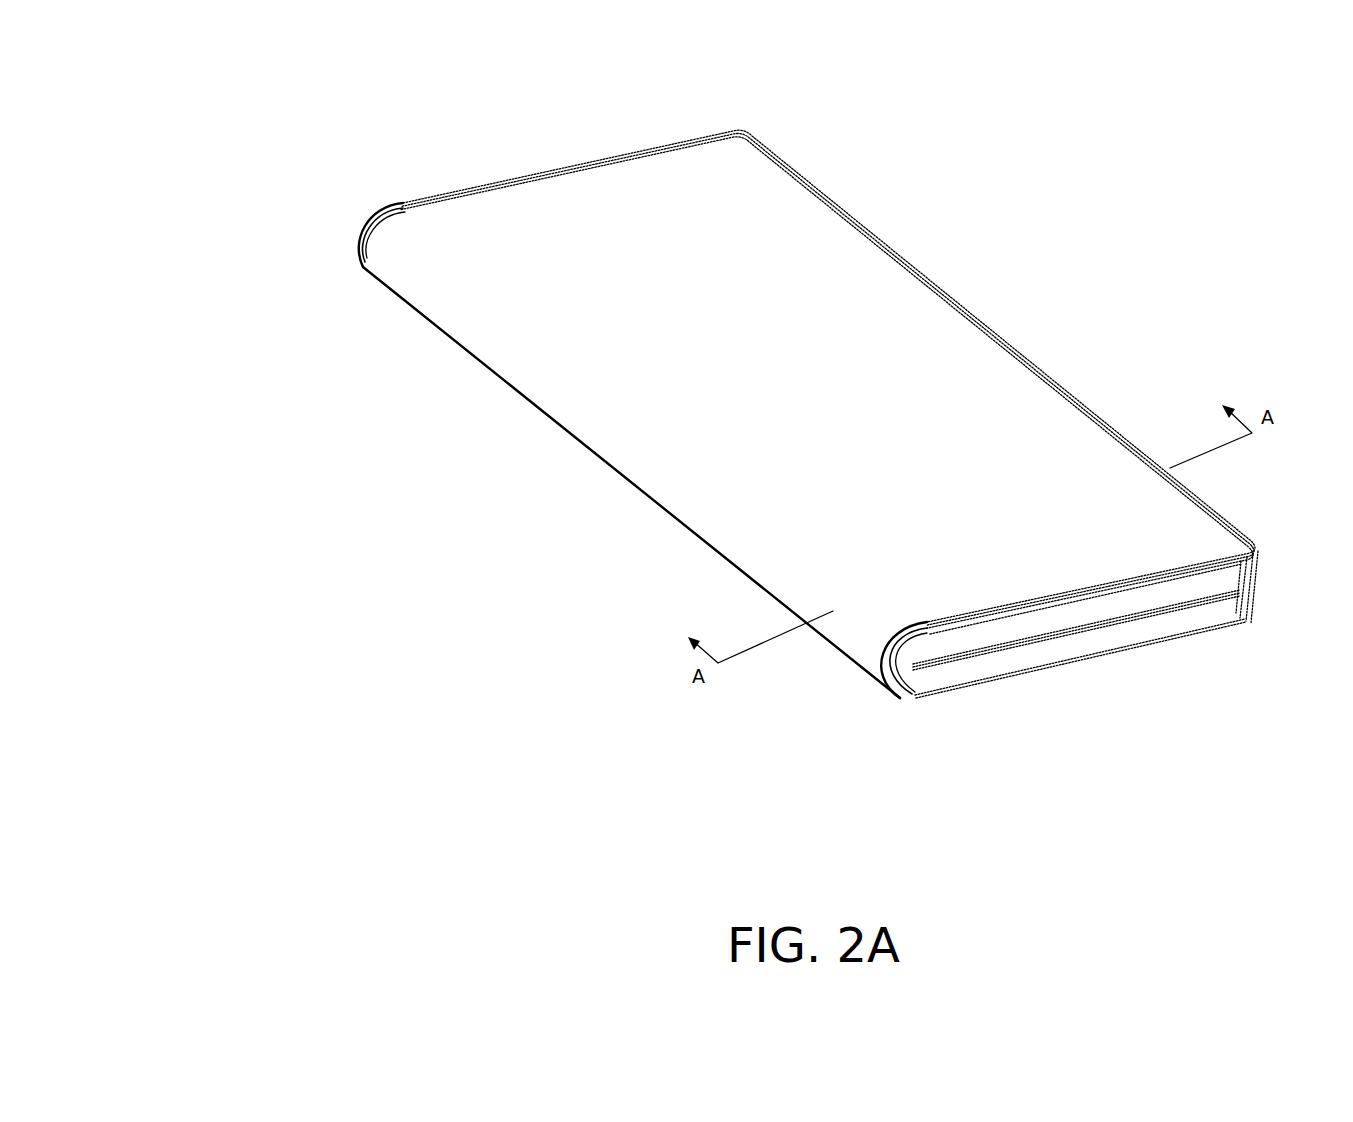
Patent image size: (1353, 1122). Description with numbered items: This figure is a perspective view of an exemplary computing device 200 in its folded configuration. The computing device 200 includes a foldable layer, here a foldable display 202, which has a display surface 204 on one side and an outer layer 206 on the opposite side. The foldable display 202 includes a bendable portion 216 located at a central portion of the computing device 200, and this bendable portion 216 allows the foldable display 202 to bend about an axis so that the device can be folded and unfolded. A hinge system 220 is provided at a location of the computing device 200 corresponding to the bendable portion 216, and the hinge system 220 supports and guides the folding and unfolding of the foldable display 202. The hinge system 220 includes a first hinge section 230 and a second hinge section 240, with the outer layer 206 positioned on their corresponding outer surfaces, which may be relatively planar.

The computing device 200 is at (770, 412).
The foldable display 202 is at (1108, 626).
The display surface 204 is at (1000, 655).
The outer layer 206 is at (638, 175).
The bendable portion 216 is at (918, 670).
The hinge system 220 is at (904, 710).
The first hinge section 230 is at (1215, 590).
The second hinge section 240 is at (1190, 623).